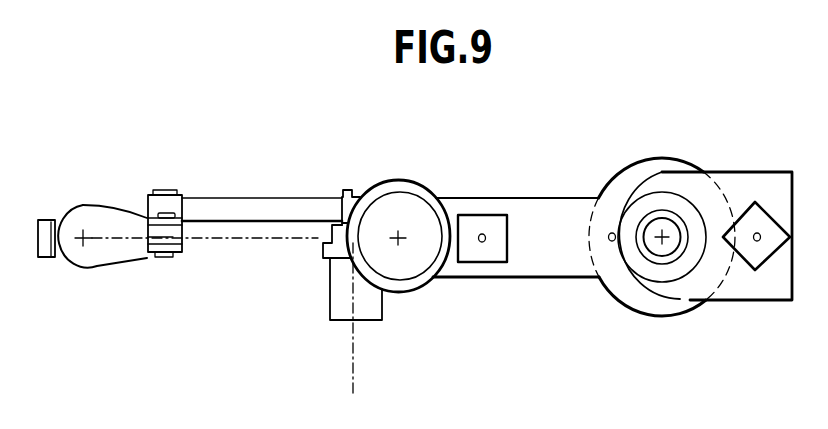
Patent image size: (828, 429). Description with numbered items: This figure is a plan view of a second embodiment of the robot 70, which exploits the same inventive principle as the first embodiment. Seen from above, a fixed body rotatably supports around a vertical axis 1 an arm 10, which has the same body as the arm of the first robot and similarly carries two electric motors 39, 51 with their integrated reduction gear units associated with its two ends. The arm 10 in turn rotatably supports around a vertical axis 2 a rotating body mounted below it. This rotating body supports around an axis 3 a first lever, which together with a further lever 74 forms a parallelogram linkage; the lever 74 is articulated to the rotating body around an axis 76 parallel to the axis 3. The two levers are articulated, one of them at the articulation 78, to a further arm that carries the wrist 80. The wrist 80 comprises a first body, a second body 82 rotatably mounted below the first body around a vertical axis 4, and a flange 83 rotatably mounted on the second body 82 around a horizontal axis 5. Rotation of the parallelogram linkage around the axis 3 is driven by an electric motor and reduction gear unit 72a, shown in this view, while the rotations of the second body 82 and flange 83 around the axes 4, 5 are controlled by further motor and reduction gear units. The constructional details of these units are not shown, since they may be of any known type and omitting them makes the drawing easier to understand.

The vertical axis 1 is at (655, 243).
The vertical axis 2 is at (402, 242).
The axis 3 is at (355, 345).
The vertical axis 4 is at (88, 242).
The horizontal axis 5 is at (120, 237).
The arm 10 is at (543, 224).
The electric motor 39 is at (760, 208).
The electric motor 51 is at (467, 227).
The robot 70 is at (794, 232).
The electric motor and reduction gear unit 72a is at (372, 320).
The lever 74 is at (258, 197).
The axis 76 is at (355, 190).
The articulation 78 is at (170, 190).
The wrist 80 is at (157, 260).
The second body 82 is at (55, 220).
The flange 83 is at (53, 258).